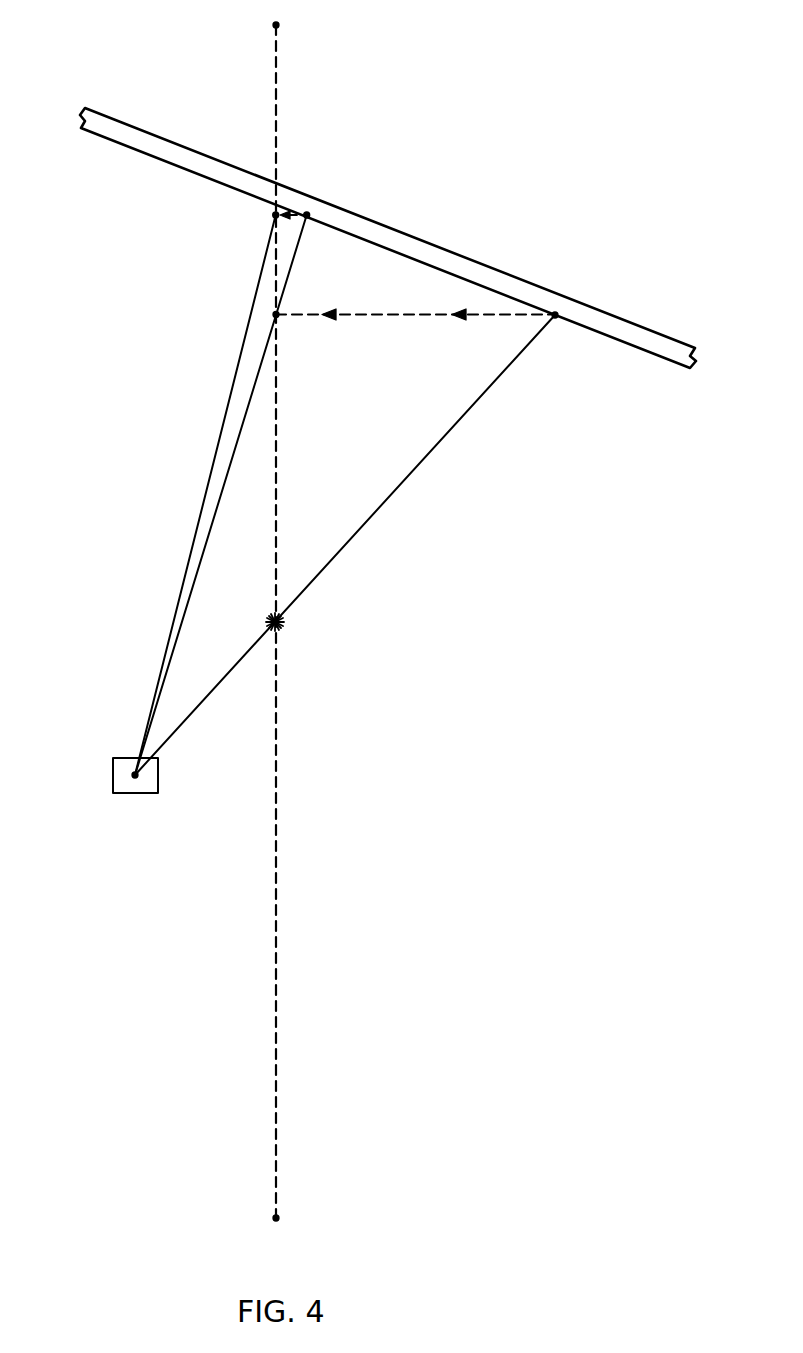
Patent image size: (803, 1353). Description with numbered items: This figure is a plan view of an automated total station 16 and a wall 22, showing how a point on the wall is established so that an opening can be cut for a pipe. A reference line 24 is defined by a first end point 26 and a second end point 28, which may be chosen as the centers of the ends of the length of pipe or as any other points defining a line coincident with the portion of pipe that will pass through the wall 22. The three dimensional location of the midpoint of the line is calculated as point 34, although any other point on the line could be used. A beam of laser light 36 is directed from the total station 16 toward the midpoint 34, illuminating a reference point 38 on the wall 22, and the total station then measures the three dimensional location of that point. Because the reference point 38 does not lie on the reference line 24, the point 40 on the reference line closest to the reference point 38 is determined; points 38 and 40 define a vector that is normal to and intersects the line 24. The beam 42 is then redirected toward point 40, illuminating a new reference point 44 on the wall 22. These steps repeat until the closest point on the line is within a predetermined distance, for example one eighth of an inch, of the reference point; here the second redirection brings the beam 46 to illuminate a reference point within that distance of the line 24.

The automated total station 16 is at (135, 793).
The wall 22 is at (616, 326).
The reference line 24 is at (276, 100).
The first end point 26 is at (276, 25).
The second end point 28 is at (276, 1218).
The midpoint 34 is at (284, 622).
The beam of laser light 36 is at (378, 512).
The reference point 38 is at (557, 318).
The point on the reference line closest to the reference point 40 is at (280, 318).
The beam of laser light 42 is at (206, 567).
The new reference point 44 is at (307, 215).
The beam of laser light 46 is at (207, 488).